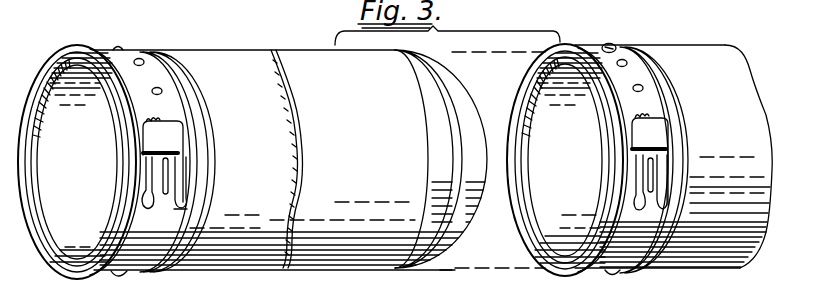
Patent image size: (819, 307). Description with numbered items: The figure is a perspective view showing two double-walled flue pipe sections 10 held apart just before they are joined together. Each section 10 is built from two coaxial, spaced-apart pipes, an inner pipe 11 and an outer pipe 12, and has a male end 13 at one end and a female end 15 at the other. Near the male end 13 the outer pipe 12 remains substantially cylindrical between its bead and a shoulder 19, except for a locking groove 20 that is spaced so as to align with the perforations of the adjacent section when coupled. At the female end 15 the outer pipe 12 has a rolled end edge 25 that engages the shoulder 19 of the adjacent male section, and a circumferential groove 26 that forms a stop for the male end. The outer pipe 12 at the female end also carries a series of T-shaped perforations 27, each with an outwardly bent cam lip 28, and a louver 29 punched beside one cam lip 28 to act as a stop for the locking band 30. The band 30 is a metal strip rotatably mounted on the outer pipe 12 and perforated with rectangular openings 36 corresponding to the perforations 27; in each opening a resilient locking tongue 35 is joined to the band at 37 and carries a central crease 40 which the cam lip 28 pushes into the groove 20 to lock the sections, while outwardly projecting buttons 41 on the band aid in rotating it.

The double-walled flue pipe section 10 is at (305, 283).
The inner pipe 11 is at (80, 174).
The outer pipe 12 is at (289, 52).
The male end 13 is at (450, 270).
The female end 15 is at (60, 278).
The shoulder 19 is at (388, 51).
The locking groove 20 is at (455, 118).
The rolled end edge 25 is at (122, 82).
The circumferential groove 26 is at (205, 108).
The T-shaped perforations 27 is at (142, 154).
The cam lip 28 is at (180, 150).
The louver 29 is at (150, 122).
The locking band 30 is at (122, 50).
The locking tongue 35 is at (175, 196).
The rectangular openings 36 is at (150, 192).
The tongue junction 37 is at (180, 206).
The central crease 40 is at (165, 178).
The buttons 41 is at (115, 280).